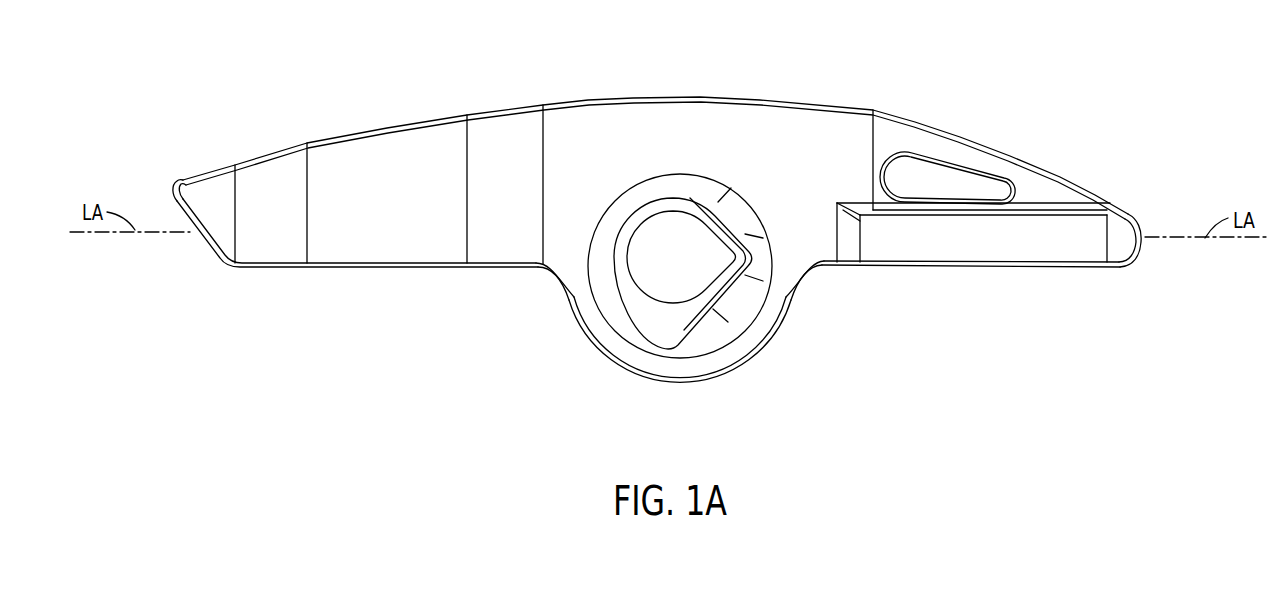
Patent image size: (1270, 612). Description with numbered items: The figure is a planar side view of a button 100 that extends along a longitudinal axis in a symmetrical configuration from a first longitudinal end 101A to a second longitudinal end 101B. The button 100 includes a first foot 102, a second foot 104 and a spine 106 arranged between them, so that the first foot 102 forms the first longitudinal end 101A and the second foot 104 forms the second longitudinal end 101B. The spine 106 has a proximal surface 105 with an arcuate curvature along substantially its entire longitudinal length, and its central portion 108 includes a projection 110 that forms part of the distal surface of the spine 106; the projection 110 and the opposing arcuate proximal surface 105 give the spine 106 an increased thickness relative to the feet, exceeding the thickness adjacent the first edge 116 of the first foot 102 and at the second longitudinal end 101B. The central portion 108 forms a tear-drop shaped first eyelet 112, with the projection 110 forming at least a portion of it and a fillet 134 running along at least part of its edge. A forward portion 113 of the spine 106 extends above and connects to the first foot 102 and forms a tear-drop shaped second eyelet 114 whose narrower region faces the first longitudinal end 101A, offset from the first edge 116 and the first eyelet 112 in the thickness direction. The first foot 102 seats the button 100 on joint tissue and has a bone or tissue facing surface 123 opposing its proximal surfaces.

The button 100 is at (657, 237).
The first longitudinal end 101A is at (1167, 220).
The second longitudinal end 101B is at (175, 190).
The first foot 102 is at (1110, 279).
The second foot 104 is at (210, 278).
The proximal surface 105 is at (687, 97).
The spine 106 is at (829, 284).
The central portion 108 is at (778, 155).
The projection 110 is at (597, 328).
The first eyelet 112 is at (692, 269).
The forward portion 113 is at (966, 212).
The second eyelet 114 is at (944, 182).
The first edge 116 is at (1142, 228).
The bone or tissue facing surface 123 is at (995, 268).
The fillet 134 is at (663, 318).